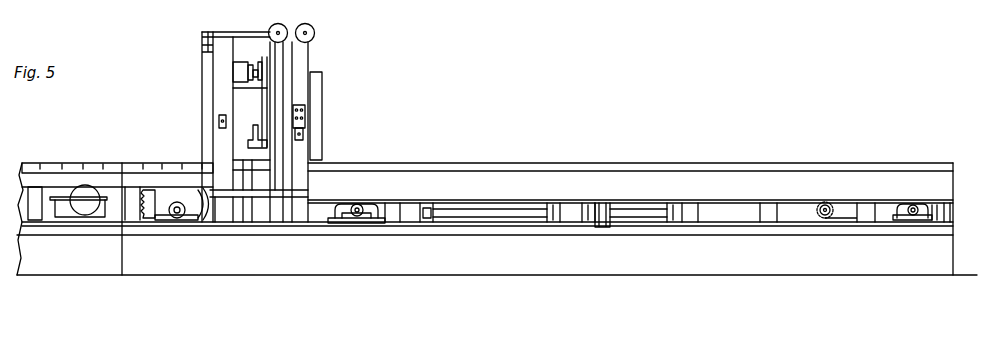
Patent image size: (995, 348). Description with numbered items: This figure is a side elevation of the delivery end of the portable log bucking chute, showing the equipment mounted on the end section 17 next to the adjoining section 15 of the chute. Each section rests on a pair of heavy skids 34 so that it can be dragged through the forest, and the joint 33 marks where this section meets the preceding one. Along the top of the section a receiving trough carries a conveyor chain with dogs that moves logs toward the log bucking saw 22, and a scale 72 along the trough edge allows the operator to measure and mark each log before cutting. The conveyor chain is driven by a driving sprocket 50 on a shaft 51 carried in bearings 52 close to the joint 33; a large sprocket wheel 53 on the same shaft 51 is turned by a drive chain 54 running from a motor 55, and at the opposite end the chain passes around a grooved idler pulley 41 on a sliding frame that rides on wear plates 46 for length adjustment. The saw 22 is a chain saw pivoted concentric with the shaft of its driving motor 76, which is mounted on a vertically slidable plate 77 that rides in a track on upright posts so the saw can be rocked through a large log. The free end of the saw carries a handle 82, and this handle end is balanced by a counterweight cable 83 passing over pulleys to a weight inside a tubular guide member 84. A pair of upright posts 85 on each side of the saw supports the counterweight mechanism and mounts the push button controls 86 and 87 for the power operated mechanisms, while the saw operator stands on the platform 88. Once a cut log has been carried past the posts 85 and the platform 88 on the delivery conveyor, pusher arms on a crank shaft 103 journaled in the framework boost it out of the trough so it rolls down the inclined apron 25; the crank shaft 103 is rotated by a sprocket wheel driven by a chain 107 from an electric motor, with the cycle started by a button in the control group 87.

The section 15 is at (529, 16).
The section 17 is at (759, 163).
The log bucking saw 22 is at (265, 100).
The inclined apron 25 is at (638, 180).
The joint 33 is at (120, 167).
The skids 34 is at (362, 260).
The grooved idler pulley 41 is at (373, 208).
The wear plates 46 is at (57, 275).
The driving sprocket 50 is at (923, 205).
The shaft 51 is at (177, 213).
The bearings 52 is at (917, 220).
The large sprocket wheel 53 is at (160, 195).
The drive chain 54 is at (827, 220).
The motor 55 is at (77, 185).
The scale 72 is at (37, 165).
The driving motor 76 is at (237, 72).
The vertically slidable plate 77 is at (237, 55).
The handle 82 is at (262, 143).
The counterweight cable 83 is at (315, 42).
The tubular guide member 84 is at (318, 90).
The upright posts 85 is at (220, 78).
The push button controls 86 is at (218, 123).
The push button controls 87 is at (305, 118).
The platform 88 is at (305, 192).
The crank shaft 103 is at (487, 215).
The chain 107 is at (600, 225).